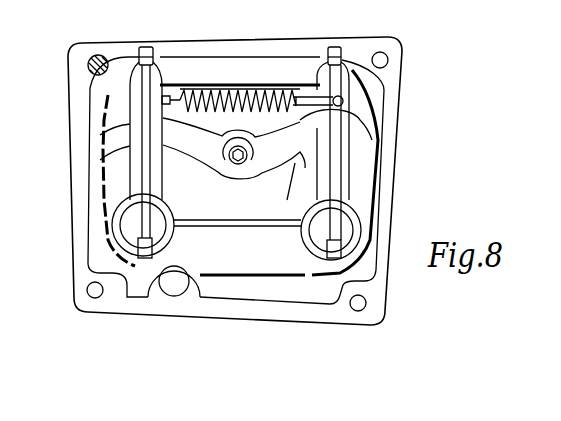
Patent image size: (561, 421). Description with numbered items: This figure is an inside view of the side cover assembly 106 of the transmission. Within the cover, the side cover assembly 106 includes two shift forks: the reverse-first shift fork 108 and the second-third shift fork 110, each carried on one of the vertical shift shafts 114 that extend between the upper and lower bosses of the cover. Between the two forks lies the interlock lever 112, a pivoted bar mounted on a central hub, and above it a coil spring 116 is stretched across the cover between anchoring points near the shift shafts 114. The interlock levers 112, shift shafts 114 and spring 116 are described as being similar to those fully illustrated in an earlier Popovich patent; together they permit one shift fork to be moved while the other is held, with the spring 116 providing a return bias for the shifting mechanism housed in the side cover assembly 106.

The side cover assembly 106 is at (235, 34).
The reverse-first shift fork 108 is at (342, 190).
The second-third shift fork 110 is at (132, 183).
The interlock levers 112 is at (288, 148).
The shift shafts 114 is at (160, 226).
The spring 116 is at (240, 86).